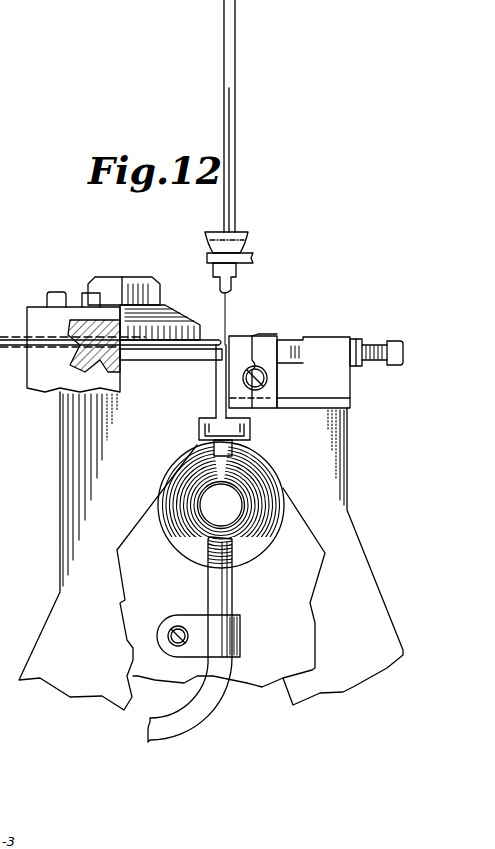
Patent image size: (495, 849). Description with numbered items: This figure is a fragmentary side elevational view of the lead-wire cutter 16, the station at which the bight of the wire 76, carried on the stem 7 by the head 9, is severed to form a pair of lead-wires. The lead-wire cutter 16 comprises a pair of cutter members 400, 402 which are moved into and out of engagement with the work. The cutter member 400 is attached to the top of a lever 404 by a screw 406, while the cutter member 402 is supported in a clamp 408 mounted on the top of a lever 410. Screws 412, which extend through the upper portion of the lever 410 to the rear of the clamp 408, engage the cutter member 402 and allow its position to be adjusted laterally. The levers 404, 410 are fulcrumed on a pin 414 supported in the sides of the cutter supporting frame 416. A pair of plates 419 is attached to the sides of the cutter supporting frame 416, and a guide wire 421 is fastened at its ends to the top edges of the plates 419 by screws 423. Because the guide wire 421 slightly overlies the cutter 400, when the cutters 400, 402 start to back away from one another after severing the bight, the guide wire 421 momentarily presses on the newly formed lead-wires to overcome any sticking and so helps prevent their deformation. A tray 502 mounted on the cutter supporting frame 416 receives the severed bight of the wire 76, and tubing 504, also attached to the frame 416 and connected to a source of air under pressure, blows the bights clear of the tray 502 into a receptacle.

The stem 7 is at (234, 46).
The wire 76 is at (229, 135).
The lead-wire cutter 16 is at (287, 200).
The head 9 is at (237, 247).
The screw 406 is at (107, 286).
The screws 423 is at (87, 296).
The guide wire 421 is at (213, 340).
The cutter member 402 is at (237, 340).
The clamp 408 is at (270, 340).
The screws 412 is at (375, 346).
The plates 419 is at (44, 385).
The cutter member 400 is at (207, 358).
The tray 502 is at (246, 432).
The pin 414 is at (213, 491).
The lever 404 is at (95, 503).
The lever 410 is at (323, 492).
The tubing 504 is at (234, 592).
The cutter supporting frame 416 is at (262, 690).